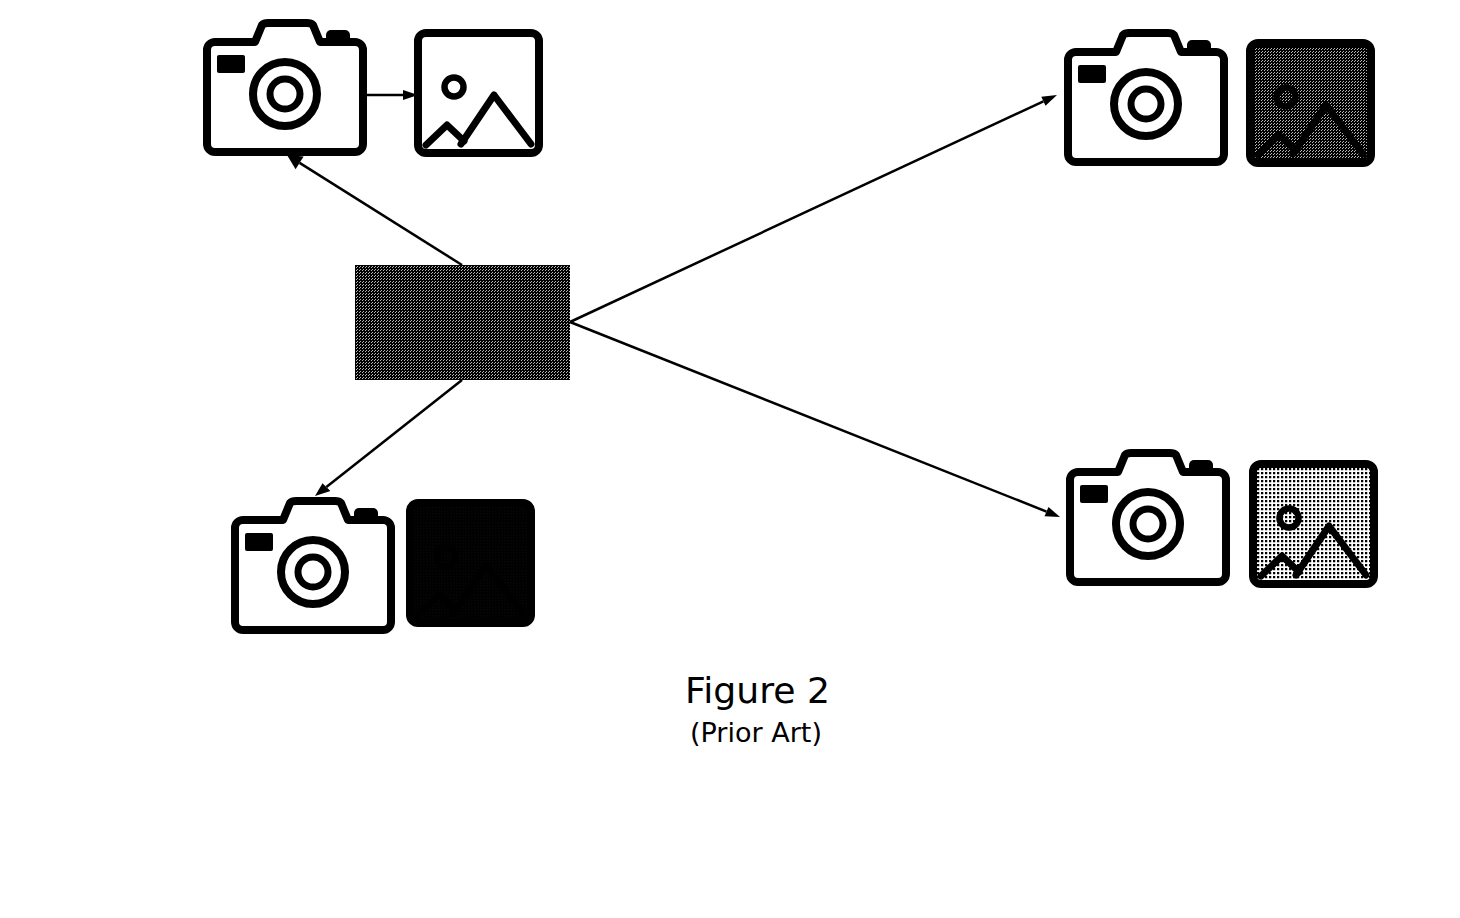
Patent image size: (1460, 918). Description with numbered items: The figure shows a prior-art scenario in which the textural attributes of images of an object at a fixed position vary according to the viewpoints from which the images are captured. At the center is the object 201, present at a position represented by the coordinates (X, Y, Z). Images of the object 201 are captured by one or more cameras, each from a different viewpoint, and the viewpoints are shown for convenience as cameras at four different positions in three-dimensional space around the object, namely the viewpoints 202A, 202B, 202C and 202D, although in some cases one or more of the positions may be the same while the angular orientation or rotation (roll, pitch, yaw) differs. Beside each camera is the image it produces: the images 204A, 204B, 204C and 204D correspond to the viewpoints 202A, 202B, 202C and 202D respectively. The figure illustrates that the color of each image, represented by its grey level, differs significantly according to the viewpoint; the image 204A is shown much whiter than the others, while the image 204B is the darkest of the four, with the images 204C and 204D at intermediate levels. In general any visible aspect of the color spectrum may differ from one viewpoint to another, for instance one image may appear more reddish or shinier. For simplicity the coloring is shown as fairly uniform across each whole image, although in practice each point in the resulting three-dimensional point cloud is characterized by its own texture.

The object 201 is at (355, 317).
The viewpoint 202A is at (207, 120).
The viewpoint 202B is at (1170, 160).
The viewpoint 202C is at (1138, 568).
The viewpoint 202D is at (240, 600).
The image 204A is at (543, 115).
The image 204B is at (1372, 130).
The image 204C is at (1372, 542).
The image 204D is at (530, 598).